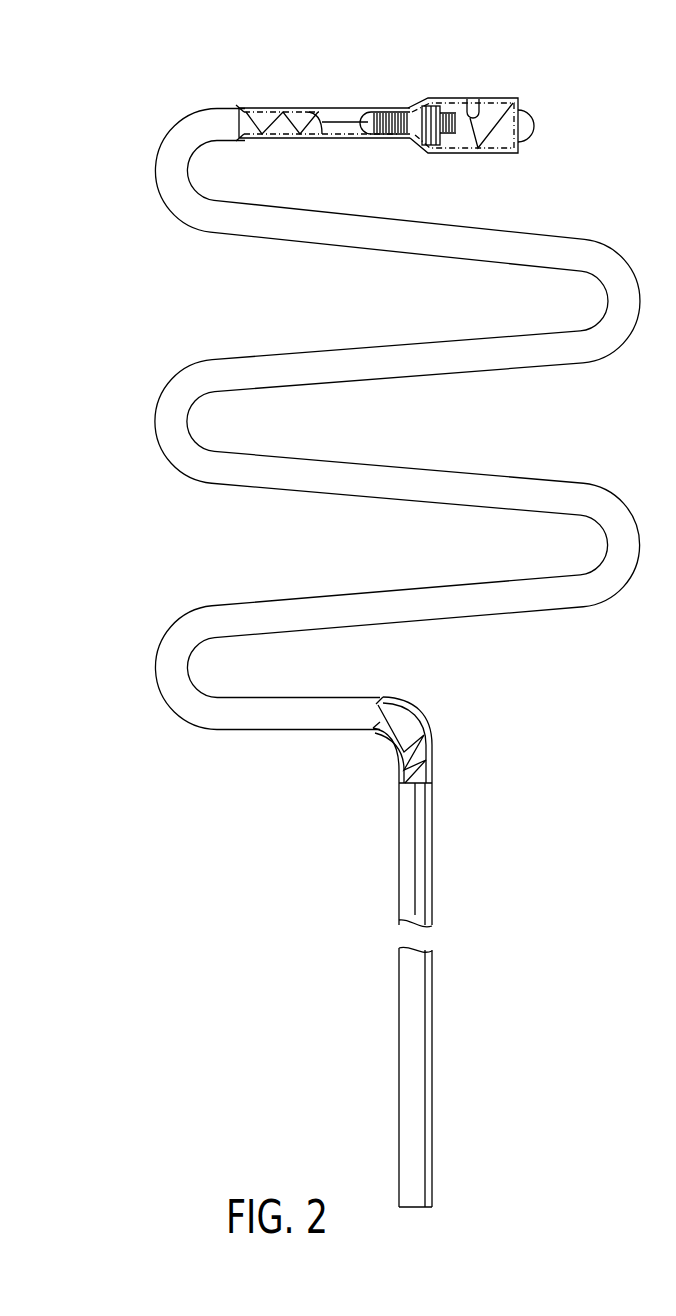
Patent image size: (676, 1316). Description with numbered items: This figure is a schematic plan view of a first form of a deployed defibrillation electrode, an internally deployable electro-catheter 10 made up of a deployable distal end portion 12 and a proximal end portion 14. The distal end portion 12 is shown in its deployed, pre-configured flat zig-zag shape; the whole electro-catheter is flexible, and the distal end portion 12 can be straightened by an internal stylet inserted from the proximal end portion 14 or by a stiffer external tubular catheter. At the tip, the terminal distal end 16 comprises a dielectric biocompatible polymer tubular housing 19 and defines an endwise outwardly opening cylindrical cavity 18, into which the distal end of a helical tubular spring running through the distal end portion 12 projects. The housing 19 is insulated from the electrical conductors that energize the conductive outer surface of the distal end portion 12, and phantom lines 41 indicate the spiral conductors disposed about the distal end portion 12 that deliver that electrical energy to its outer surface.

The internally deployable electro-catheter 10 is at (440, 800).
The deployable distal end portion 12 is at (152, 413).
The proximal end portion 14 is at (433, 1023).
The terminal distal end 16 is at (427, 98).
The cylindrical cavity 18 is at (478, 114).
The tubular housing 19 is at (441, 99).
The phantom lines 41 is at (250, 118).